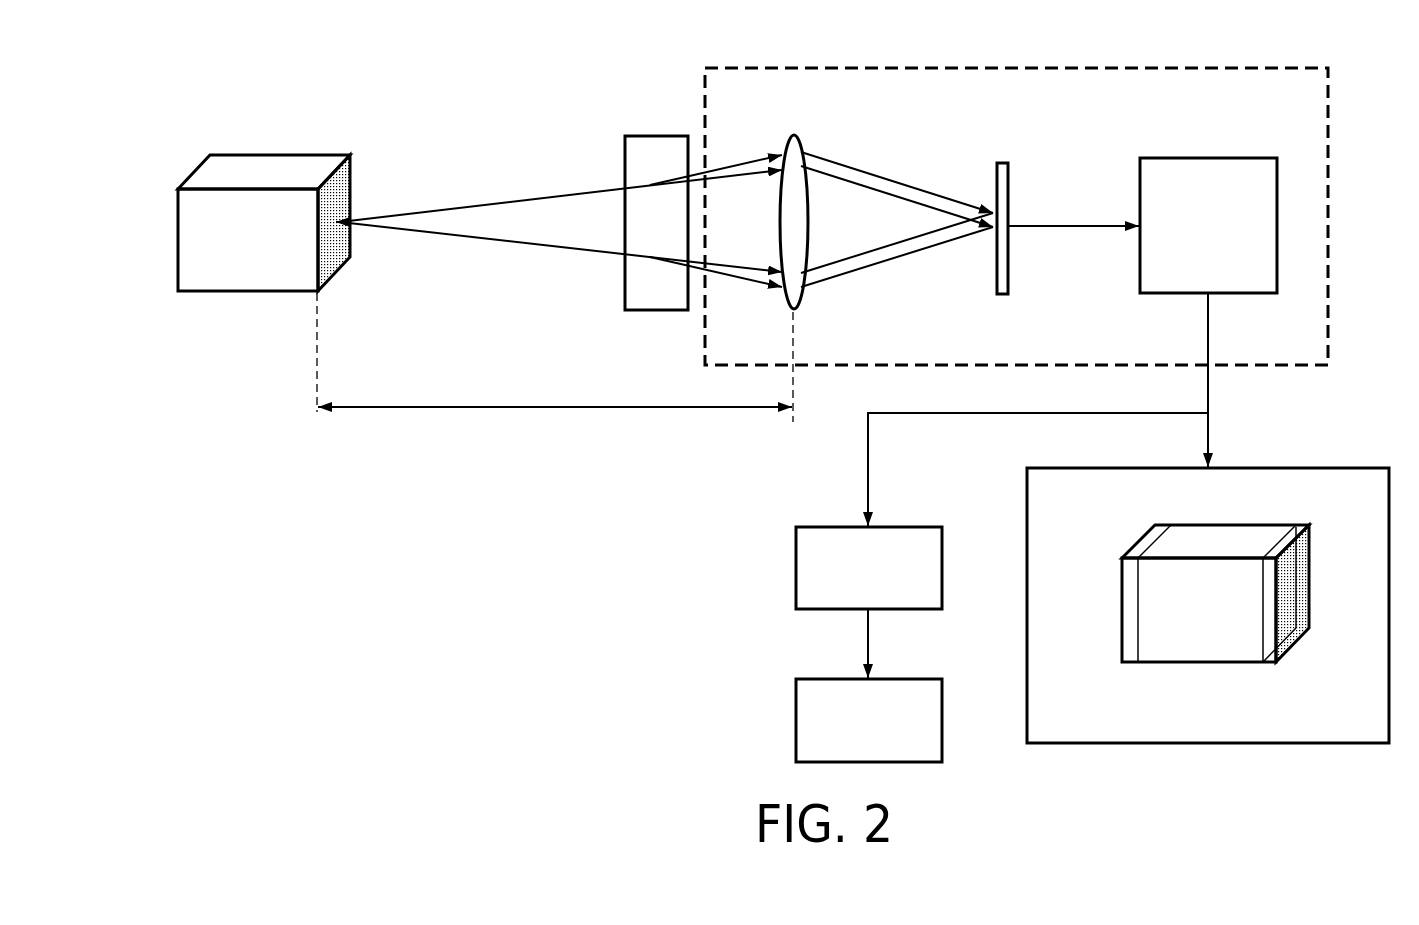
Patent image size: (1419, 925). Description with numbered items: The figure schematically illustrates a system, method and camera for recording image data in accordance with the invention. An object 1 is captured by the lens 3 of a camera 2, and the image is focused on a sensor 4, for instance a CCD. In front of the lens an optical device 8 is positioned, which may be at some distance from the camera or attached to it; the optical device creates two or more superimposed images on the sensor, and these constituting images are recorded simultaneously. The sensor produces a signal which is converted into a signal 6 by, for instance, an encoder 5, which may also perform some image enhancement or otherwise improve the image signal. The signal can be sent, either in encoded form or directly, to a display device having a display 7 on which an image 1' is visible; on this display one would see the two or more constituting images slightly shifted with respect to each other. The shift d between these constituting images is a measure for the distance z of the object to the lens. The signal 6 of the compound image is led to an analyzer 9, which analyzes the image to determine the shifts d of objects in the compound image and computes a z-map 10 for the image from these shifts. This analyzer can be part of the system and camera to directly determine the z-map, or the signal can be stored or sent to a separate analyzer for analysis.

The object 1 is at (264, 260).
The image 1' is at (1215, 629).
The camera 2 is at (963, 92).
The lens 3 is at (800, 150).
The sensor 4 is at (1000, 162).
The encoder 5 is at (1198, 157).
The signal 6 is at (1208, 330).
The display 7 is at (1057, 600).
The optical device 8 is at (656, 136).
The analyzer 9 is at (796, 565).
The z-map 10 is at (796, 718).
The shift d is at (1290, 540).
The distance z is at (555, 357).